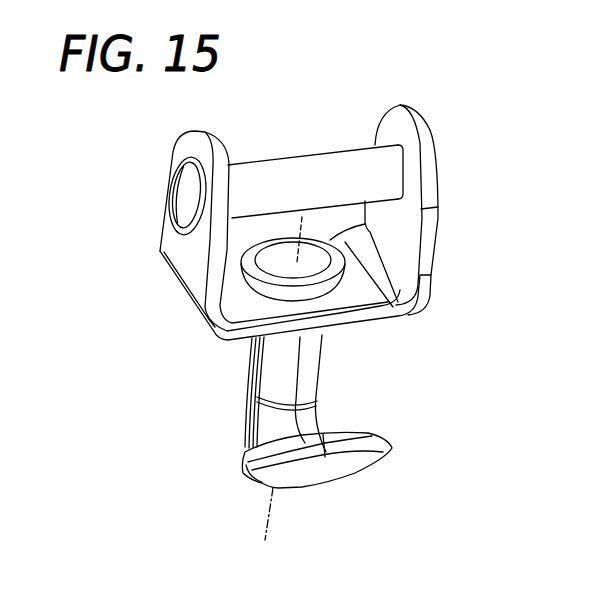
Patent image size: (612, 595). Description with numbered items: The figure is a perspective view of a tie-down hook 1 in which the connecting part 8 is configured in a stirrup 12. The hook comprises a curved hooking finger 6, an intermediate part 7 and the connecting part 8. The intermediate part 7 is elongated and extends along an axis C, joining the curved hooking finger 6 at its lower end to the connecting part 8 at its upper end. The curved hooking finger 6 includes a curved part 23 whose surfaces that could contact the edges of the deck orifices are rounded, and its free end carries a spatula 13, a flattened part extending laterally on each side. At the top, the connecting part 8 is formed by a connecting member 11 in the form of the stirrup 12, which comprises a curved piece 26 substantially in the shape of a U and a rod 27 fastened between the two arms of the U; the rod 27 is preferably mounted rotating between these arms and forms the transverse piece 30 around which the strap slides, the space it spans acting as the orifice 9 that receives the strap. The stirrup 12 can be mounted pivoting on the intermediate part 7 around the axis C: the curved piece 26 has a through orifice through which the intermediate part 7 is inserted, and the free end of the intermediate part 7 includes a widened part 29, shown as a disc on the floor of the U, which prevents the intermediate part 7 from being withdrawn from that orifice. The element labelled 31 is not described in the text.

The tie-down hook 1 is at (582, 75).
The curved hooking finger 6 is at (297, 393).
The intermediate part 7 is at (297, 393).
The connecting part 8 is at (330, 222).
The orifice 9 is at (416, 150).
The connecting member 11 is at (330, 222).
The stirrup 12 is at (330, 222).
The spatula 13 is at (412, 448).
The curved part 23 is at (239, 432).
The curved piece 26 is at (166, 240).
The rod 27 is at (315, 161).
The widened part 29 is at (313, 258).
The transverse piece 30 is at (274, 175).
The disc 31 is at (416, 150).
The axis C is at (268, 513).